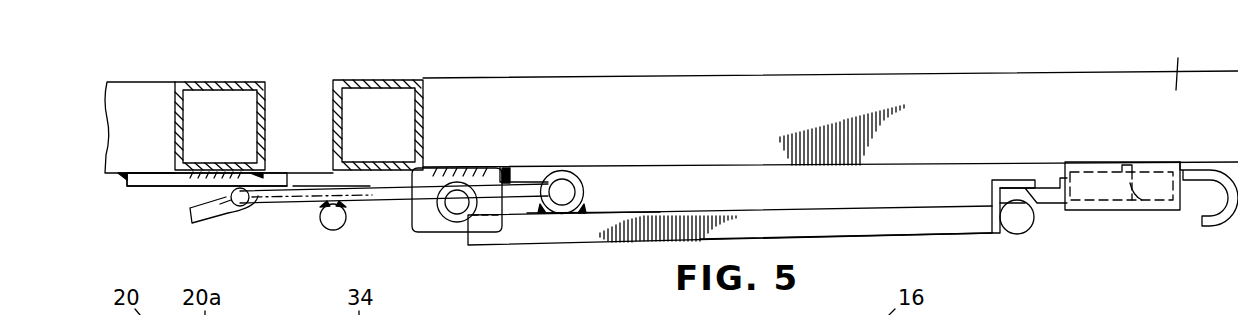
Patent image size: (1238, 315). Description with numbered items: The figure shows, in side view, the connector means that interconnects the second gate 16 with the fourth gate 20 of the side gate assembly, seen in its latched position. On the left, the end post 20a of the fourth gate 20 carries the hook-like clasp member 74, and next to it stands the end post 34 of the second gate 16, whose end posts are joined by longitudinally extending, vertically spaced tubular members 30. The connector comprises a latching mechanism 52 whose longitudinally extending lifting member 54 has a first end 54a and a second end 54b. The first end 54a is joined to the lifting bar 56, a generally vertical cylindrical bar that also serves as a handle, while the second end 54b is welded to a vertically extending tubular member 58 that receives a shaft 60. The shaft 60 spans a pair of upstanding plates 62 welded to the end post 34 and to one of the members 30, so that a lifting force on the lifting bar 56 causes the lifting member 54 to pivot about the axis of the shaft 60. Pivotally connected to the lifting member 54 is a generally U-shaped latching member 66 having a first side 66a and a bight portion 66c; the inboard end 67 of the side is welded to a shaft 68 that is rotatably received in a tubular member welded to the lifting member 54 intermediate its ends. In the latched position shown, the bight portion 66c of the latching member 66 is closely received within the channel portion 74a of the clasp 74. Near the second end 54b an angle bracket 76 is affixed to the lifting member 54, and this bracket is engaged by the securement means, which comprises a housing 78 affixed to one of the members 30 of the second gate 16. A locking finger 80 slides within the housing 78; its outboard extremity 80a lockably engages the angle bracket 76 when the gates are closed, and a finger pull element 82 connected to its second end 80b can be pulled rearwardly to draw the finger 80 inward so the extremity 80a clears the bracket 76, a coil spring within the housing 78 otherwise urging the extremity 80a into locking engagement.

The second side gate 16 is at (890, 71).
The fourth gate 20 is at (135, 82).
The end post 20a is at (210, 83).
The tubular member 30 is at (1178, 62).
The end post 34 is at (372, 80).
The latching mechanism 52 is at (637, 186).
The lifting member 54 is at (816, 205).
The first end 54a is at (968, 213).
The second end 54b is at (478, 246).
The lifting bar 56 is at (1017, 220).
The tubular member 58 is at (452, 216).
The shaft 60 is at (432, 228).
The upstanding plate 62 is at (448, 176).
The latching member 66 is at (288, 183).
The first side 66a is at (308, 190).
The bight portion 66c is at (212, 200).
The inboard end 67 is at (528, 182).
The shaft 68 is at (563, 190).
The clasp member 74 is at (140, 173).
The channel portion 74a is at (223, 215).
The angle bracket 76 is at (1008, 181).
The housing 78 is at (1092, 168).
The locking finger 80 is at (1093, 197).
The outboard extremity 80a is at (1043, 193).
The second end 80b is at (1143, 210).
The finger pull element 82 is at (1214, 222).